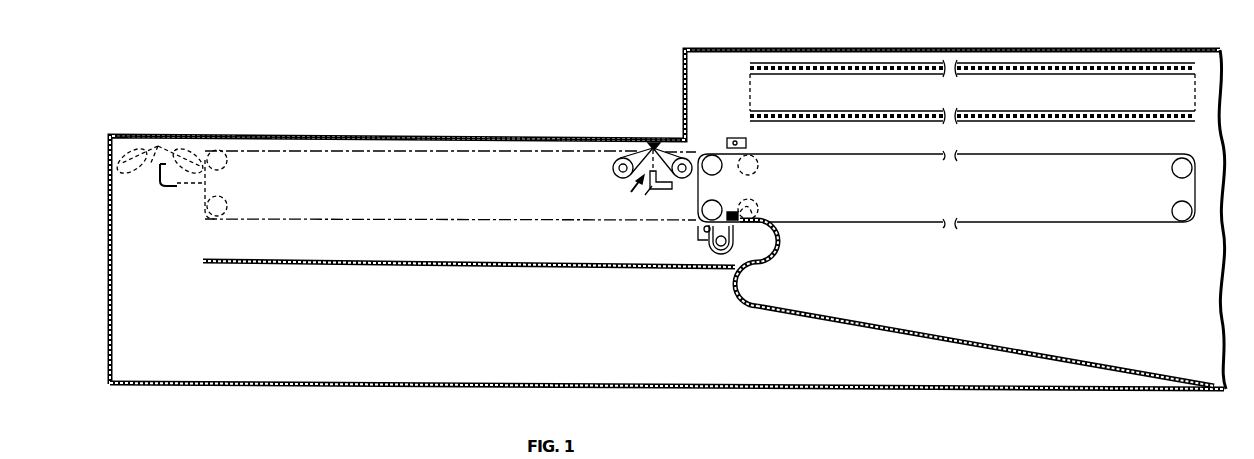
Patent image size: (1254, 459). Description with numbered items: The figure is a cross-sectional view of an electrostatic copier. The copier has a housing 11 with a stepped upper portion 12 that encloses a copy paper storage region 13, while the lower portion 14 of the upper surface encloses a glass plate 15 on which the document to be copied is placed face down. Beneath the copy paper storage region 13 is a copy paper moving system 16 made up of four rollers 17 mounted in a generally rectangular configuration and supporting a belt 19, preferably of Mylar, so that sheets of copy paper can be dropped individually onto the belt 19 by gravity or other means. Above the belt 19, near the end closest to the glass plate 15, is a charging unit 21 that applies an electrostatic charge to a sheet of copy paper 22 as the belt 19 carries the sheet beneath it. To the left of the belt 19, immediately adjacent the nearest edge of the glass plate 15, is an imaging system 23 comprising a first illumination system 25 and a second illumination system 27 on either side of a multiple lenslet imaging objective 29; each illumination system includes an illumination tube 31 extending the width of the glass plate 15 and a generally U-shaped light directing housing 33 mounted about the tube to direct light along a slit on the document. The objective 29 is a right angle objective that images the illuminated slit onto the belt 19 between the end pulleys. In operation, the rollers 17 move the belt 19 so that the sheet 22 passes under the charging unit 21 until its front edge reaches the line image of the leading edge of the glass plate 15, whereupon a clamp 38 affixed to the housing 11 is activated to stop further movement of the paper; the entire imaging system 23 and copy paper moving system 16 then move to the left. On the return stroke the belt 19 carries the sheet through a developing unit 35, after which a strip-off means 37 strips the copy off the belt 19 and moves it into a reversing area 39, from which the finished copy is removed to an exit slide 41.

The housing 11 is at (108, 247).
The stepped upper portion 12 is at (806, 49).
The copy paper storage region 13 is at (828, 101).
The lower portion of the upper surface 14 is at (157, 121).
The glass plate 15 is at (394, 139).
The copy paper moving system 16 is at (946, 189).
The rollers 17 is at (714, 170).
The belt 19 is at (1087, 224).
The charging unit 21 is at (747, 141).
The sheet of copy paper 22 is at (803, 153).
The imaging system 23 is at (634, 190).
The first illumination system 25 is at (612, 168).
The second illumination system 27 is at (674, 186).
The multiple lenslet imaging objective 29 is at (650, 192).
The illumination tube 31 is at (620, 173).
The light directing housing 33 is at (653, 147).
The developing unit 35 is at (707, 239).
The strip-off means 37 is at (778, 243).
The clamp 38 is at (752, 216).
The reversing area 39 is at (484, 256).
The exit slide 41 is at (974, 303).